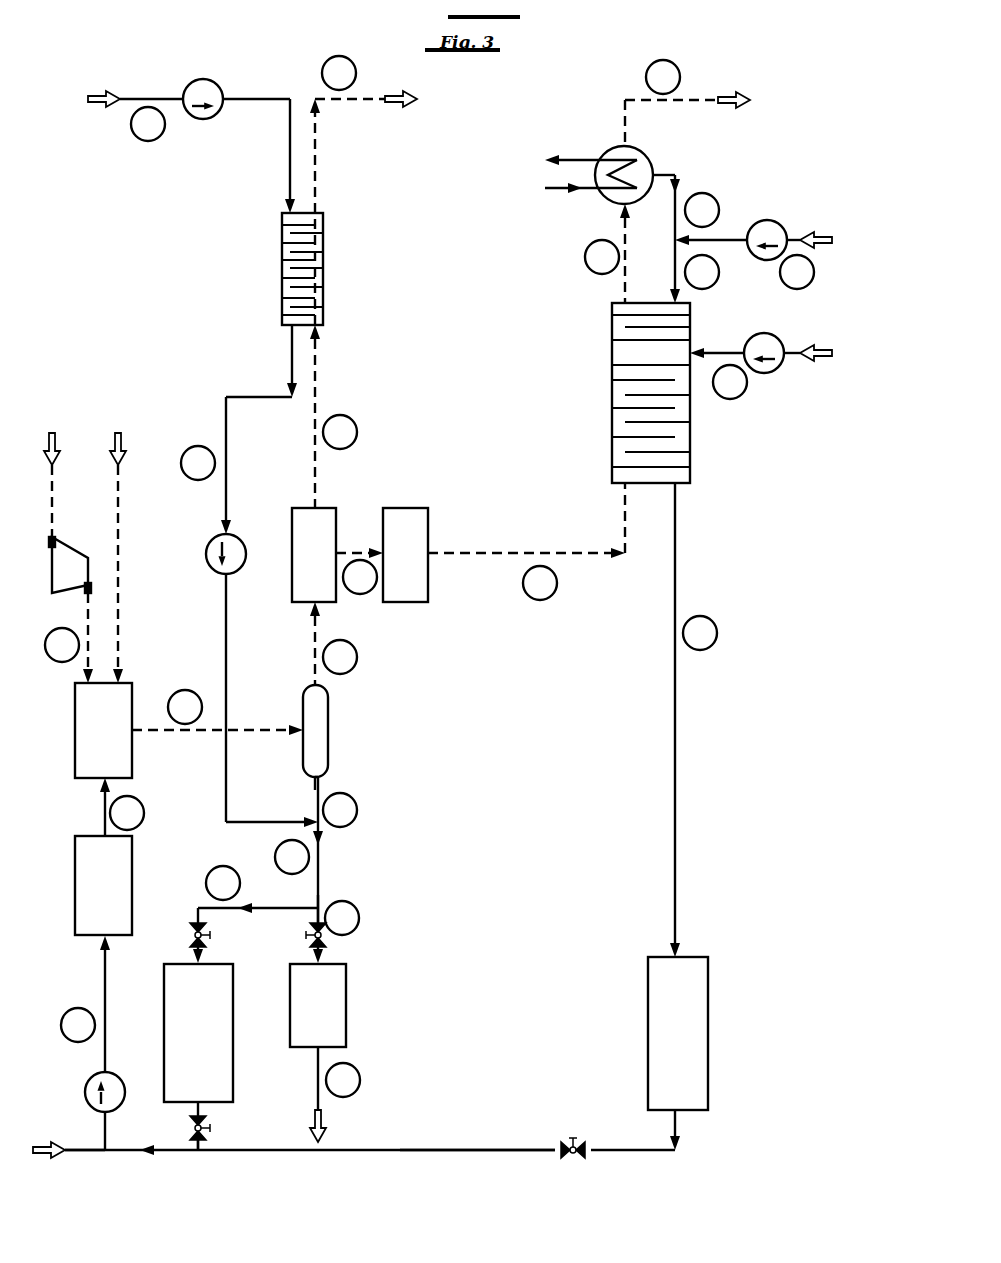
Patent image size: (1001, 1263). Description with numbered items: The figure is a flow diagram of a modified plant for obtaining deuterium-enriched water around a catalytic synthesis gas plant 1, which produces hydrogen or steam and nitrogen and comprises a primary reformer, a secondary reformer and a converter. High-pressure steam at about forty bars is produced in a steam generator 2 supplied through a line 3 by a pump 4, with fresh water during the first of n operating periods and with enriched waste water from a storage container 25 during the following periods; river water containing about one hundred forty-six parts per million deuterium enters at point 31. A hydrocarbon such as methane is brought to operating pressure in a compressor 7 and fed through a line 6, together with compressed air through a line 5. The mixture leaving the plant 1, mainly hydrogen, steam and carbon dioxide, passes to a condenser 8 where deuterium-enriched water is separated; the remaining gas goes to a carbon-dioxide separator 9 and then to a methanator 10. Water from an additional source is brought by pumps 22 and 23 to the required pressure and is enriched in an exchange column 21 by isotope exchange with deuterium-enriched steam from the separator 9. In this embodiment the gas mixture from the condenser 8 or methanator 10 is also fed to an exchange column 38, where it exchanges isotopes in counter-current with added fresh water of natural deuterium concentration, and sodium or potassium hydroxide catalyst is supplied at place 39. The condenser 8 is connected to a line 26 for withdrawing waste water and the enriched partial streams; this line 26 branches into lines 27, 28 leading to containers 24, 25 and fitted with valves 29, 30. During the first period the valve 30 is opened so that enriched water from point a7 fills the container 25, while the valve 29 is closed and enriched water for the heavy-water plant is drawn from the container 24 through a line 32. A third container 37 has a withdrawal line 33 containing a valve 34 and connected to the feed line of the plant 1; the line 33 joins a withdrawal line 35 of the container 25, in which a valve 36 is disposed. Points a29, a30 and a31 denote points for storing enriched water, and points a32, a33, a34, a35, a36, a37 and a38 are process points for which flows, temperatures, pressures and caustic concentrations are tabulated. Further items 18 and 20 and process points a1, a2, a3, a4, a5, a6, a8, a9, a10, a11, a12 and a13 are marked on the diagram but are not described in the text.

The catalytic synthesis gas plant 1 is at (80, 710).
The steam generator 2 is at (80, 878).
The line 3 is at (107, 1048).
The pump 4 is at (85, 1093).
The line 5 is at (126, 538).
The line 6 is at (86, 605).
The compressor 7 is at (68, 548).
The condenser 8 is at (330, 735).
The carbon-dioxide separator 9 is at (320, 508).
The methanator 10 is at (410, 508).
The pump 18 is at (772, 221).
The heat exchanger 20 is at (651, 160).
The exchange column 21 is at (325, 275).
The pump 22 is at (215, 85).
The pump 23 is at (206, 554).
The container 24 is at (348, 1008).
The storage container 25 is at (235, 1008).
The line 26 is at (322, 779).
The line 27 is at (314, 912).
The line 28 is at (267, 910).
The valve 29 is at (327, 942).
The valve 30 is at (190, 938).
The point 31 is at (82, 1150).
The line 32 is at (312, 1065).
The withdrawal line 33 is at (438, 1150).
The valve 34 is at (580, 1142).
The withdrawal line 35 is at (206, 1150).
The valve 36 is at (190, 1126).
The third container 37 is at (710, 1038).
The exchange column 38 is at (612, 406).
The place 39 is at (712, 351).
The stream a1 is at (105, 1025).
The stream a2 is at (105, 813).
The stream a3 is at (88, 645).
The stream a4 is at (185, 730).
The stream a5 is at (315, 657).
The stream a6 is at (318, 810).
The process point a7 is at (318, 857).
The stream a8 is at (315, 432).
The stream a9 is at (339, 99).
The stream a10 is at (148, 99).
The stream a11 is at (226, 463).
The stream a12 is at (360, 553).
The stream a13 is at (540, 553).
The process point a29 is at (223, 908).
The process point a30 is at (318, 918).
The process point a31 is at (318, 1080).
The process point a32 is at (625, 257).
The process point a33 is at (663, 100).
The process point a34 is at (675, 210).
The process point a35 is at (797, 240).
The process point a36 is at (675, 272).
The process point a37 is at (730, 353).
The process point a38 is at (675, 633).